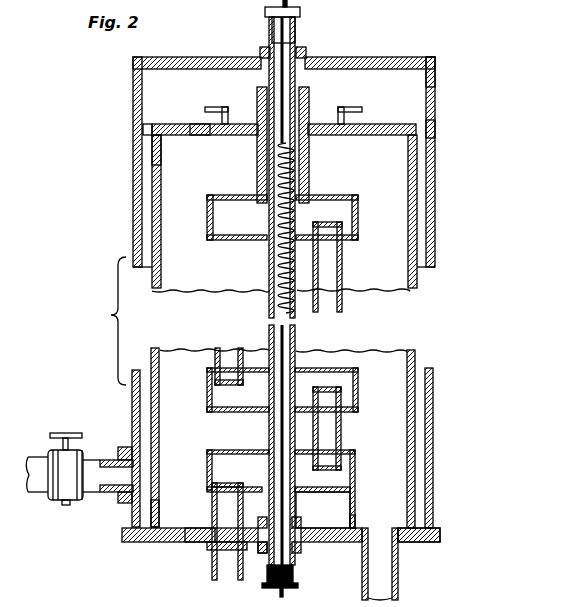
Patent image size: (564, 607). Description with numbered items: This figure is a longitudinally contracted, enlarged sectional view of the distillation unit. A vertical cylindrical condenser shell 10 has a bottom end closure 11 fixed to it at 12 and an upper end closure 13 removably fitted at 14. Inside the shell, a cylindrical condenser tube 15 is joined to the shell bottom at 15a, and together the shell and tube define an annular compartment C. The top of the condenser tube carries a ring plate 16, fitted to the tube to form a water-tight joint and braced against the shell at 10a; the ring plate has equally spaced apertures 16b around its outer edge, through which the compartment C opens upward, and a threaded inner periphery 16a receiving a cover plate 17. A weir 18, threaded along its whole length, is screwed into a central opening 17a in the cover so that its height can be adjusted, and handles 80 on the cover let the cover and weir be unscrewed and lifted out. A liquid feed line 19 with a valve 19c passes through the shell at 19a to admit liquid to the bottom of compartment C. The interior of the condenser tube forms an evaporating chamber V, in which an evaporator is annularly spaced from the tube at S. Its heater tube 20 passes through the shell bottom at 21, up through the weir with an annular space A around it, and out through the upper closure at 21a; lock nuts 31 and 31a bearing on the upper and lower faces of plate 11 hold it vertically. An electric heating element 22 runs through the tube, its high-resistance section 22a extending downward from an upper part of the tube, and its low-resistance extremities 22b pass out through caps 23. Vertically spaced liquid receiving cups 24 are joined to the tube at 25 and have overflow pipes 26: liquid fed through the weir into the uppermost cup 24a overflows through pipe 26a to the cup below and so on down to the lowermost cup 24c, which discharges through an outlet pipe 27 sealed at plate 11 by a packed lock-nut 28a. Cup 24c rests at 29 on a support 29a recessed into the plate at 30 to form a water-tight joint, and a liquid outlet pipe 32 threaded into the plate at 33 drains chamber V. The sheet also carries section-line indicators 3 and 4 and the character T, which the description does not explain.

The condenser shell 10 is at (436, 222).
The shell engagement point 10a is at (436, 128).
The bottom end closure 11 is at (336, 544).
The bottom closure fixing 12 is at (431, 531).
The upper end closure 13 is at (352, 59).
The upper closure fitting 14 is at (438, 60).
The condenser tube 15 is at (161, 218).
The tube-to-shell joint 15a is at (159, 525).
The ring plate 16 is at (387, 124).
The threaded inner periphery 16a is at (197, 125).
The apertures 16b is at (146, 130).
The cover plate 17 is at (257, 136).
The central opening 17a is at (309, 137).
The weir 18 is at (161, 140).
The liquid feed line 19 is at (103, 460).
The feed line passage 19a is at (128, 504).
The valve 19c is at (68, 478).
The heater tube 20 is at (296, 31).
The bottom passage of heater tube 21 is at (301, 553).
The top passage of heater tube 21a is at (306, 56).
The electric heating element 22 is at (277, 347).
The high resistance wire section 22a is at (278, 262).
The heating element extremities 22b is at (290, 4).
The caps 23 is at (266, 11).
The liquid receiving cups 24 is at (358, 393).
The uppermost cup 24a is at (359, 212).
The lowermost cup 24c is at (356, 472).
The cup joint 25 is at (264, 245).
The overflow pipes 26 is at (341, 430).
The uppermost overflow pipe 26a is at (343, 262).
The outlet pipe 27 is at (222, 568).
The lock-nut 28a is at (210, 549).
The cup rest 29 is at (356, 492).
The support 29a is at (356, 518).
The recess 30 is at (197, 528).
The upper lock nut 31 is at (301, 526).
The lower lock nut 31a is at (262, 555).
The liquid outlet pipe 32 is at (399, 581).
The outlet pipe threading 33 is at (400, 545).
The section line 3- 3 is at (190, 103).
The section line 4- 4 is at (173, 432).
The handles 80 is at (228, 107).
The annular space A is at (258, 113).
The annular compartment C is at (208, 85).
The evaporating chamber V is at (180, 248).
The tube T is at (327, 298).
The annular spacing S is at (385, 405).